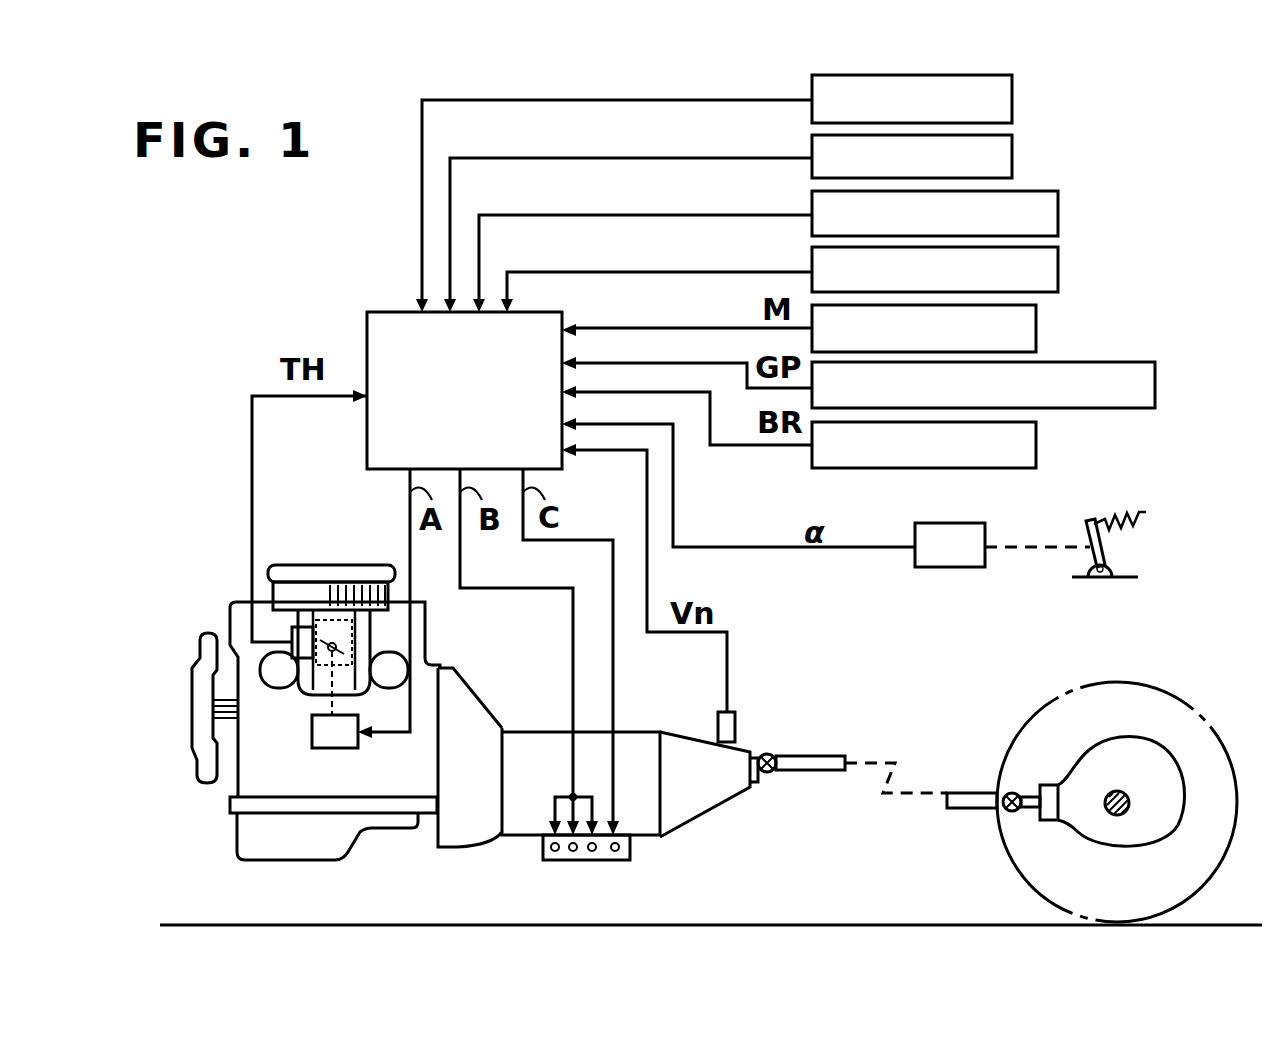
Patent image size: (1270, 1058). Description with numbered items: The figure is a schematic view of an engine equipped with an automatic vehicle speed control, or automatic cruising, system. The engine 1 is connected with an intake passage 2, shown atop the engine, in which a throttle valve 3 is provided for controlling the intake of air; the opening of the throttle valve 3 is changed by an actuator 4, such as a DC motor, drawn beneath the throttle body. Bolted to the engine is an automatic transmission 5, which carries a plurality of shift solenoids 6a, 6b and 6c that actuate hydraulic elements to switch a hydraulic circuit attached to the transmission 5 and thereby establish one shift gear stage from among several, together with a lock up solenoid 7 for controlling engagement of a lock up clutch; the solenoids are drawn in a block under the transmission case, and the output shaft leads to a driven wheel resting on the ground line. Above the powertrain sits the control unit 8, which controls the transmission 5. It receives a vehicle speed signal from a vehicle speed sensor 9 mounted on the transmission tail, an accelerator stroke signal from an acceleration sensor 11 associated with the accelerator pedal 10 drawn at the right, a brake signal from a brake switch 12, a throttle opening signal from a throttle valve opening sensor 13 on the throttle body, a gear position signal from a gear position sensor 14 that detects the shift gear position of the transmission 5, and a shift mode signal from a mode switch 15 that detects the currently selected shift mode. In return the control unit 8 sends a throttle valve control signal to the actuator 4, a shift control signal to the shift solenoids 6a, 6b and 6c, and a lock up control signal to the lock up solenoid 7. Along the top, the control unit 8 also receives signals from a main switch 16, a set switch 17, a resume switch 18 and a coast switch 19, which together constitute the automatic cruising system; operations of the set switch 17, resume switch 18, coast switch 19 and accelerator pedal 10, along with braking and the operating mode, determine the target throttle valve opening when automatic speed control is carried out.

The engine 1 is at (216, 612).
The intake passage 2 is at (323, 613).
The throttle valve 3 is at (345, 650).
The actuator 4 is at (308, 735).
The automatic transmission 5 is at (639, 722).
The shift solenoid 6a is at (543, 847).
The shift solenoid 6b is at (573, 860).
The shift solenoid 6c is at (600, 860).
The lock up solenoid 7 is at (630, 848).
The control unit 8 is at (368, 311).
The vehicle speed sensor 9 is at (735, 728).
The accelerator pedal 10 is at (1110, 546).
The acceleration sensor 11 is at (968, 567).
The brake switch 12 is at (1037, 445).
The throttle valve opening sensor 13 is at (292, 640).
The gear position sensor 14 is at (1156, 384).
The mode switch 15 is at (1037, 328).
The main switch 16 is at (1013, 97).
The set switch 17 is at (1013, 155).
The resume switch 18 is at (1059, 215).
The coast switch 19 is at (1059, 268).